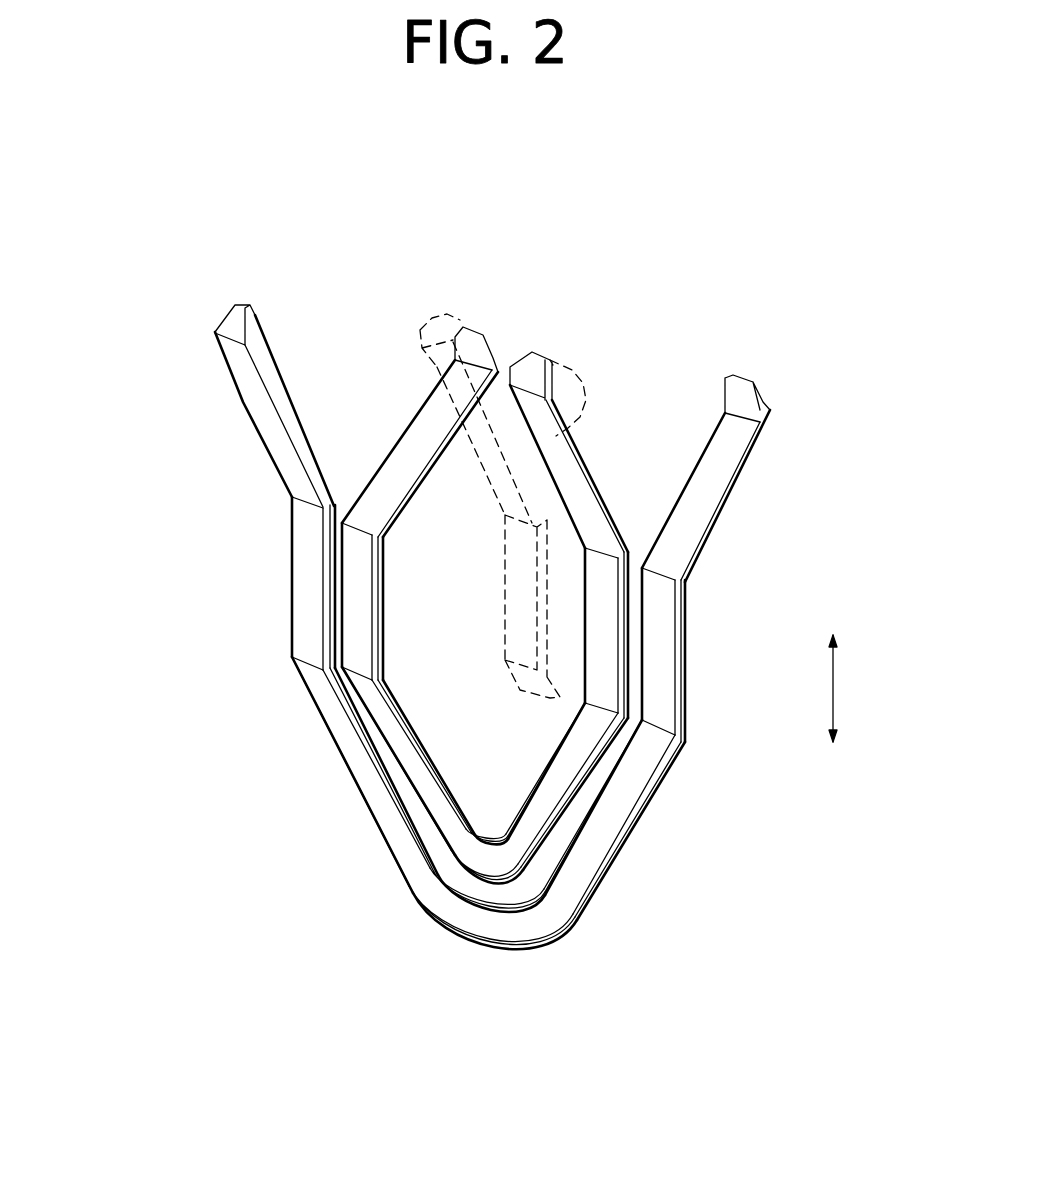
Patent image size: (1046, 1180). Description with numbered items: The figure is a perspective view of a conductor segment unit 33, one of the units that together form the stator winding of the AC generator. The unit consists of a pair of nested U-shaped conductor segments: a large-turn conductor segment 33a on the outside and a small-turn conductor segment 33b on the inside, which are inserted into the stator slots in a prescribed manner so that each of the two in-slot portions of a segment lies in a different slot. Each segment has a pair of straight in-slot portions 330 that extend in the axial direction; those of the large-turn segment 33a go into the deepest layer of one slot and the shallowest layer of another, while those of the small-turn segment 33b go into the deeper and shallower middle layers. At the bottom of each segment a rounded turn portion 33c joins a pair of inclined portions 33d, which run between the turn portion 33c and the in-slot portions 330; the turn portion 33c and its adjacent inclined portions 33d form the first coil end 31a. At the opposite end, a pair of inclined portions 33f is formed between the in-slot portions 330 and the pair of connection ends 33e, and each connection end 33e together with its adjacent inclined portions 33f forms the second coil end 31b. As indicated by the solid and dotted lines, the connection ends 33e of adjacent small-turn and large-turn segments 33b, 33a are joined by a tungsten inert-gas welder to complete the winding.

The conductor segment unit 33 is at (325, 320).
The first coil end 31a is at (419, 511).
The second coil end 31b is at (240, 409).
The large-turn U-shaped conductor segment 33a is at (316, 627).
The small-turn U-shaped conductor segment 33b is at (362, 590).
The in-slot portion 330 is at (353, 648).
The turn portion 33c is at (462, 865).
The inclined portion 33d is at (418, 775).
The connection end 33e is at (444, 313).
The inclined portion 33f is at (578, 500).